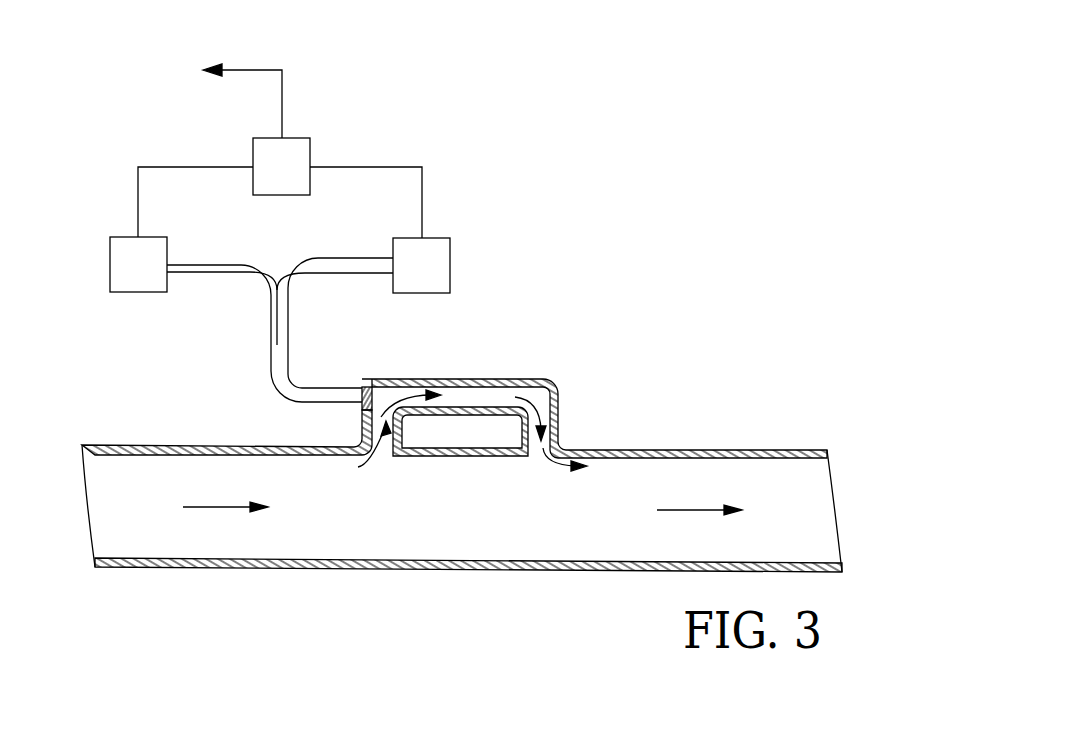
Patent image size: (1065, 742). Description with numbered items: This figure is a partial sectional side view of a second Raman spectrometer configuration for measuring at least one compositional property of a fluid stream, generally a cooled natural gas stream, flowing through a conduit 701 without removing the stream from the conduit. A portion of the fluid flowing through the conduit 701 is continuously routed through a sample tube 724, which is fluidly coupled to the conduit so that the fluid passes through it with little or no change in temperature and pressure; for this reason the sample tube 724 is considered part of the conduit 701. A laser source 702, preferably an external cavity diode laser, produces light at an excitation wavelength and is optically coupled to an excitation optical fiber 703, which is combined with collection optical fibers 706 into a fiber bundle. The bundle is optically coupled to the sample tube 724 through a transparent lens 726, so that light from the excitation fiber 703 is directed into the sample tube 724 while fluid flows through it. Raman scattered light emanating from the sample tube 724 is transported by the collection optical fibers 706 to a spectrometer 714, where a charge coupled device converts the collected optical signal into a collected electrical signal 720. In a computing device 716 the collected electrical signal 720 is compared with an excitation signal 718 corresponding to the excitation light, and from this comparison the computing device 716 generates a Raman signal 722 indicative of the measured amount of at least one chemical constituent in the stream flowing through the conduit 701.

The conduit 701 is at (660, 450).
The laser source 702 is at (110, 265).
The excitation optical fiber 703 is at (200, 273).
The collection optical fibers 706 is at (355, 274).
The spectrometer 714 is at (450, 265).
The computing device 716 is at (295, 138).
The excitation signal 718 is at (175, 166).
The collected electrical signal 720 is at (385, 167).
The Raman signal 722 is at (256, 70).
The sample tube 724 is at (470, 379).
The transparent lens 726 is at (362, 380).